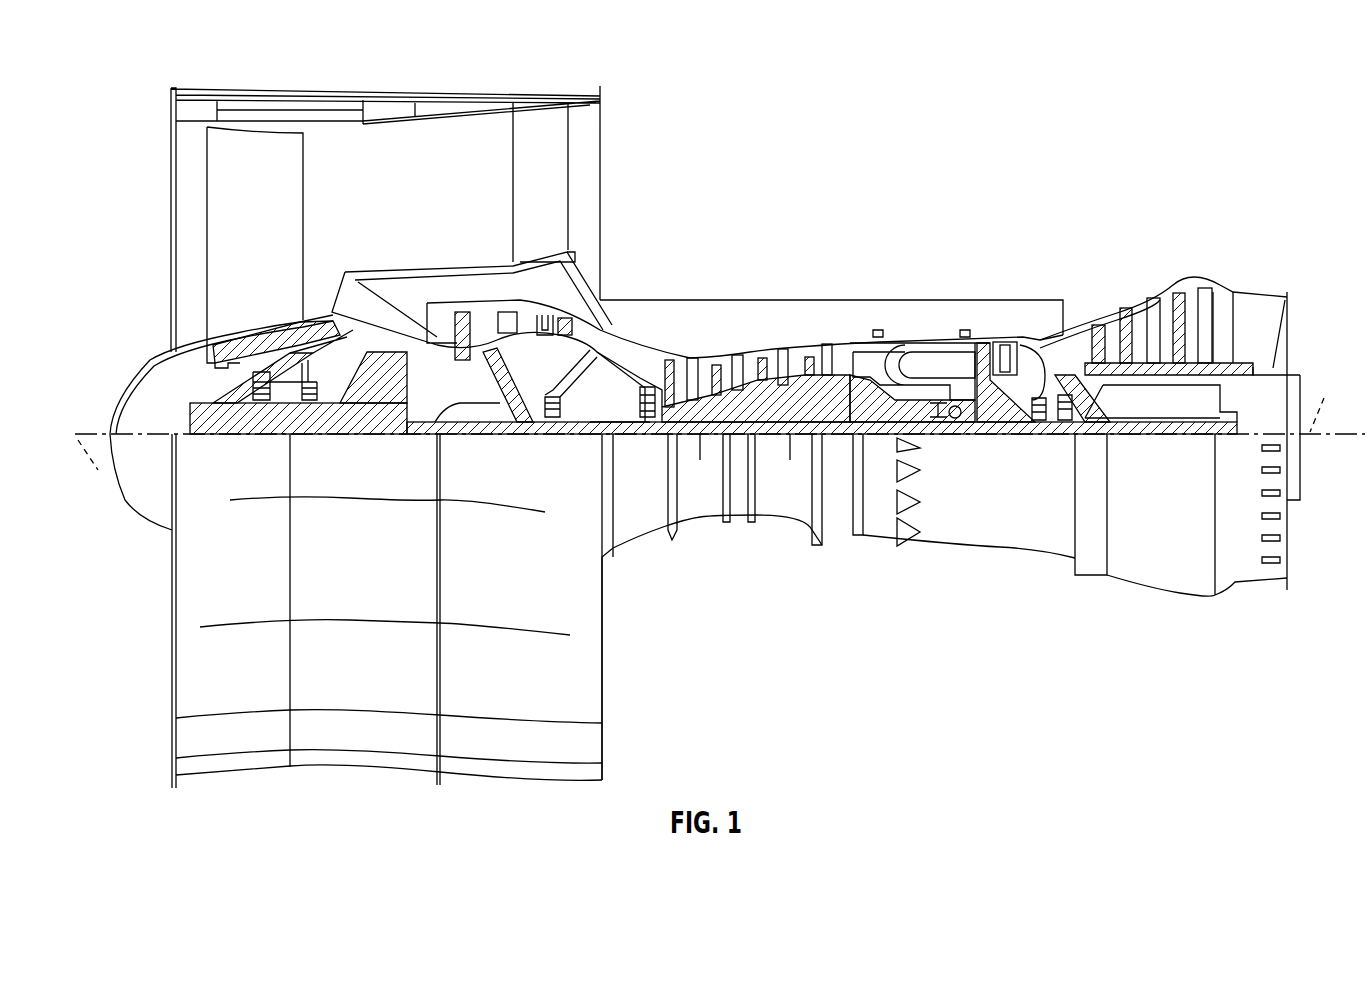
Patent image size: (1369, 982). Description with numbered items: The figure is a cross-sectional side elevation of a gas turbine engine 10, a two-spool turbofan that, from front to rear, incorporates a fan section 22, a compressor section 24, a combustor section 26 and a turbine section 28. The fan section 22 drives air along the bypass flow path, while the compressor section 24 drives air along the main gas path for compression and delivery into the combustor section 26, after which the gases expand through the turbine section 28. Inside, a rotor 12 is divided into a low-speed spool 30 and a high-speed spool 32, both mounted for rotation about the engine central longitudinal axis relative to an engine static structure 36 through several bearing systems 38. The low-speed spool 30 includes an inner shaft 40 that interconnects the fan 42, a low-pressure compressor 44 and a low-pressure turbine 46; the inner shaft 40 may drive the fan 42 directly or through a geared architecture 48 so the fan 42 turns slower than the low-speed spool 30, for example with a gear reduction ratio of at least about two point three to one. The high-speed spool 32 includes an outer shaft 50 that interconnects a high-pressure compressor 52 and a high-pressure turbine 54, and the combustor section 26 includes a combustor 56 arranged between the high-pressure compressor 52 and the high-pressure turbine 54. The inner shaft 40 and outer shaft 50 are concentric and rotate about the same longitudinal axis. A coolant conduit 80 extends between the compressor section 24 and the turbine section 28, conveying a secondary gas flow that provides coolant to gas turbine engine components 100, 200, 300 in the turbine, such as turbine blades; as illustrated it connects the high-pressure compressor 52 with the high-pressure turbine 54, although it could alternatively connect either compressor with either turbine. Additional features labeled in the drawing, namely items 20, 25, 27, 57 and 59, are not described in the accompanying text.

The gas turbine engine 10 is at (140, 812).
The rotor 12 is at (747, 405).
The core engine 20 is at (1110, 72).
The fan section 22 is at (290, 85).
The compressor section 24 is at (706, 265).
The compressor rotor blade 25 is at (458, 314).
The combustor section 26 is at (968, 245).
The stator vane 27 is at (484, 312).
The turbine section 28 is at (1198, 242).
The low-speed spool 30 is at (800, 440).
The high-speed spool 32 is at (850, 392).
The engine static structure 36 is at (840, 547).
The bearing systems 38 is at (560, 412).
The inner shaft 40 is at (614, 440).
The fan 42 is at (340, 163).
The low-pressure compressor 44 is at (535, 280).
The low-pressure turbine 46 is at (1150, 300).
The geared architecture 48 is at (387, 405).
The outer shaft 50 is at (963, 417).
The high-pressure compressor 52 is at (767, 403).
The high-pressure turbine 54 is at (1020, 350).
The combustor 56 is at (927, 362).
The turbine frame 57 is at (1094, 240).
The turbine vane 59 is at (1055, 352).
The coolant conduit 80 is at (862, 300).
The gas turbine engine component 100 is at (1028, 517).
The gas turbine engine component 200 is at (1028, 517).
The gas turbine engine component 300 is at (985, 430).